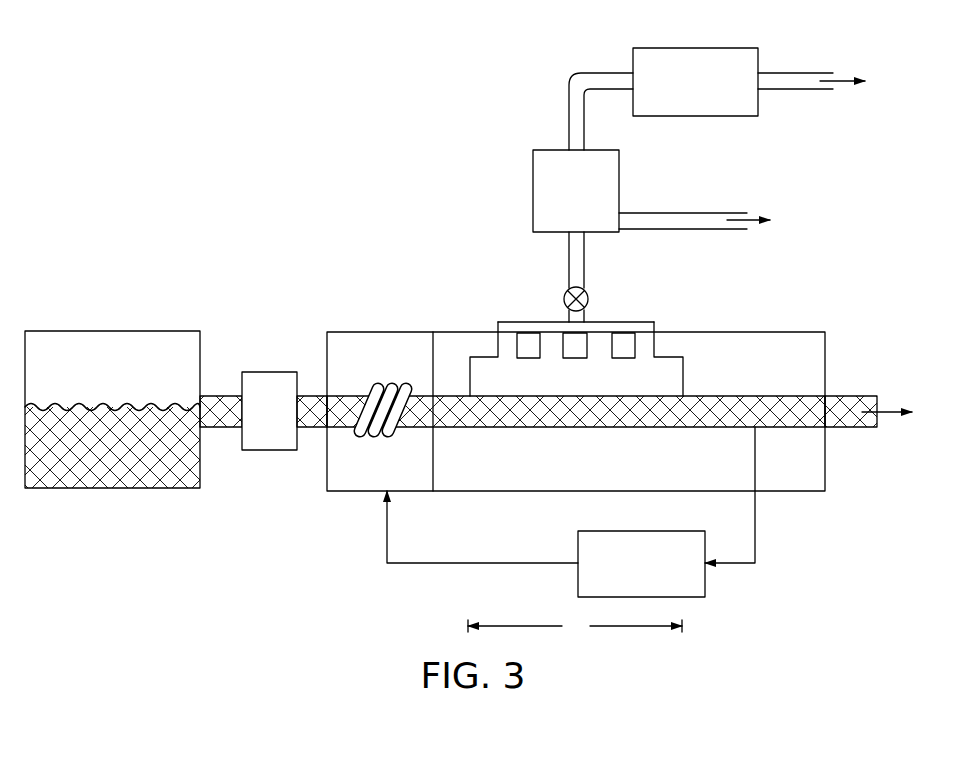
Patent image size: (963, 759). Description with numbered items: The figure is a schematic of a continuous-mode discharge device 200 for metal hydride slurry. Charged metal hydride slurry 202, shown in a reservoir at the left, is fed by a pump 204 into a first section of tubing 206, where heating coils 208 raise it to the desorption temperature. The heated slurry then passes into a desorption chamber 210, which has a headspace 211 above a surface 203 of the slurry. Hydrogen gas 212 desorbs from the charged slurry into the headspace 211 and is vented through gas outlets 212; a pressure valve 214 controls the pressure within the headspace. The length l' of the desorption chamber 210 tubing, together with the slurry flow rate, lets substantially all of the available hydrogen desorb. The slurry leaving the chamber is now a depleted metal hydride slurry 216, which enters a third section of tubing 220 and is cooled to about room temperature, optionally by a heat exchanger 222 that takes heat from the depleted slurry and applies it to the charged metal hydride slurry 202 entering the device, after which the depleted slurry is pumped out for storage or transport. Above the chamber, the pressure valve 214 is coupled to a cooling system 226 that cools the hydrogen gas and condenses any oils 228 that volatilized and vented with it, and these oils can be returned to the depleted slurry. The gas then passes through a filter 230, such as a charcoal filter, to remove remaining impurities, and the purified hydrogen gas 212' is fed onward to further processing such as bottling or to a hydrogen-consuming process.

The continuous-mode discharge device 200 is at (140, 115).
The charged metal hydride slurry 202 is at (78, 480).
The surface of the slurry 203 is at (500, 387).
The pump 204 is at (270, 372).
The first section of tubing 206 is at (320, 426).
The heating coils 208 is at (392, 383).
The desorption chamber 210 is at (685, 371).
The headspace 211 is at (554, 390).
The hydrogen gas / gas outlets 212 is at (577, 341).
The purified hydrogen gas 212' is at (811, 54).
The pressure valve 214 is at (566, 293).
The depleted metal hydride slurry 216 is at (845, 417).
The third section of tubing 220 is at (767, 432).
The heat exchanger 222 is at (642, 529).
The cooling system 226 is at (533, 192).
The oils 228 is at (645, 223).
The filter 230 is at (697, 47).